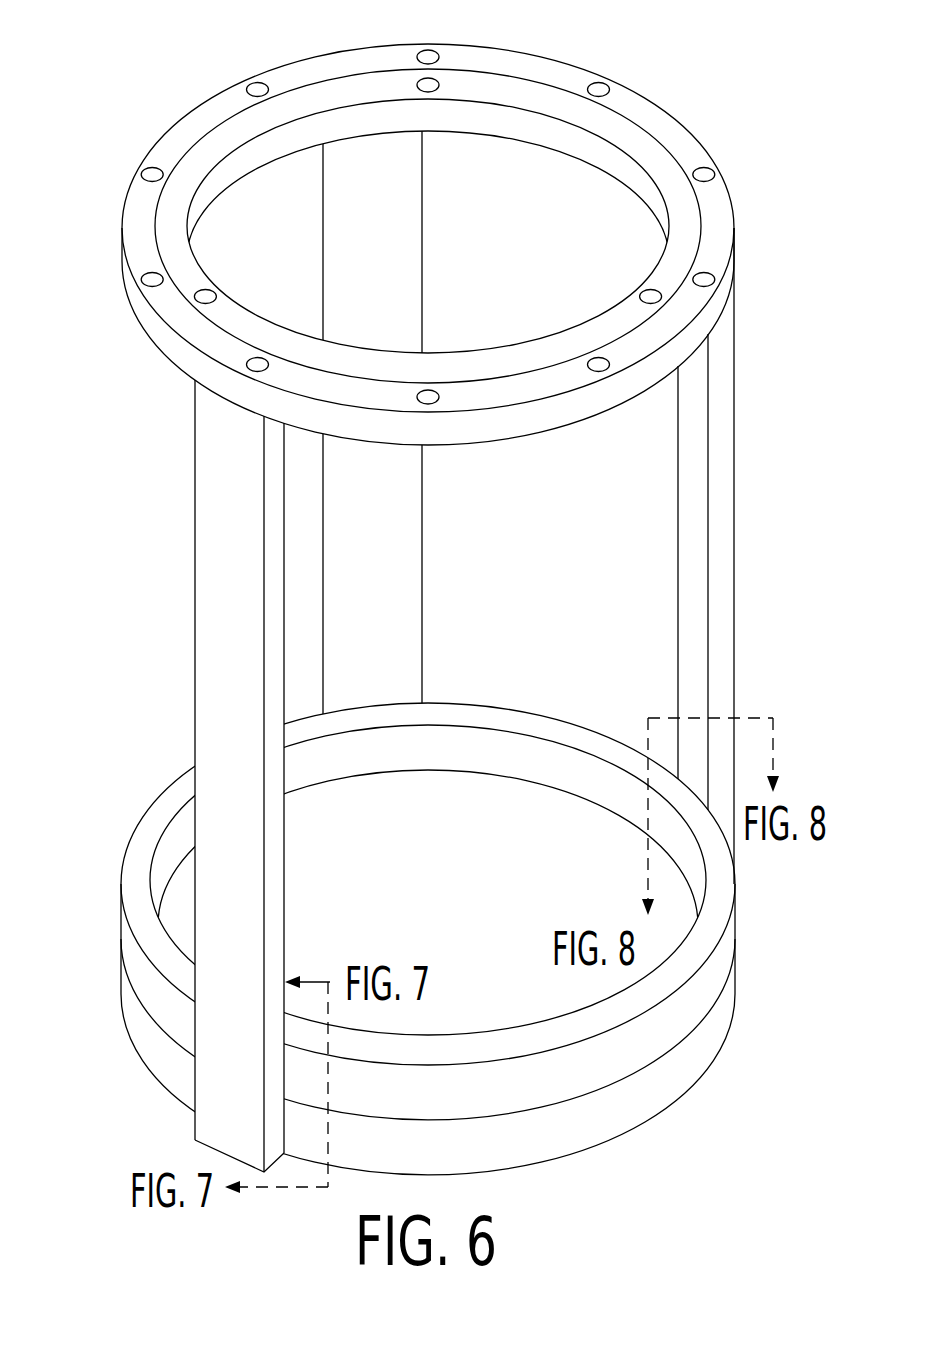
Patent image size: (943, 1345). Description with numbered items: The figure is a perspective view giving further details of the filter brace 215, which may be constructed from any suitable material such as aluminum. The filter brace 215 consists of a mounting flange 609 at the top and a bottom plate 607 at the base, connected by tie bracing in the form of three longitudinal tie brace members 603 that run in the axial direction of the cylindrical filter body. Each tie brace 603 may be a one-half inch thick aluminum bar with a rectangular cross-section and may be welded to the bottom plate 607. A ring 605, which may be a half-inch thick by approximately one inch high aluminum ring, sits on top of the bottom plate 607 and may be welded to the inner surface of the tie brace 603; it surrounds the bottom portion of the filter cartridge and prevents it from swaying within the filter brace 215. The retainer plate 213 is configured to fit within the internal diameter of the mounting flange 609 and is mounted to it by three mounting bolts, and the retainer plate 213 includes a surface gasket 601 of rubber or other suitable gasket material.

The filter brace 215 is at (437, 591).
The retainer plate 213 is at (474, 237).
The surface gasket 601 is at (673, 183).
The tie brace members 603 is at (424, 220).
The ring 605 is at (137, 853).
The bottom plate 607 is at (668, 1026).
The mounting flange 609 is at (735, 210).